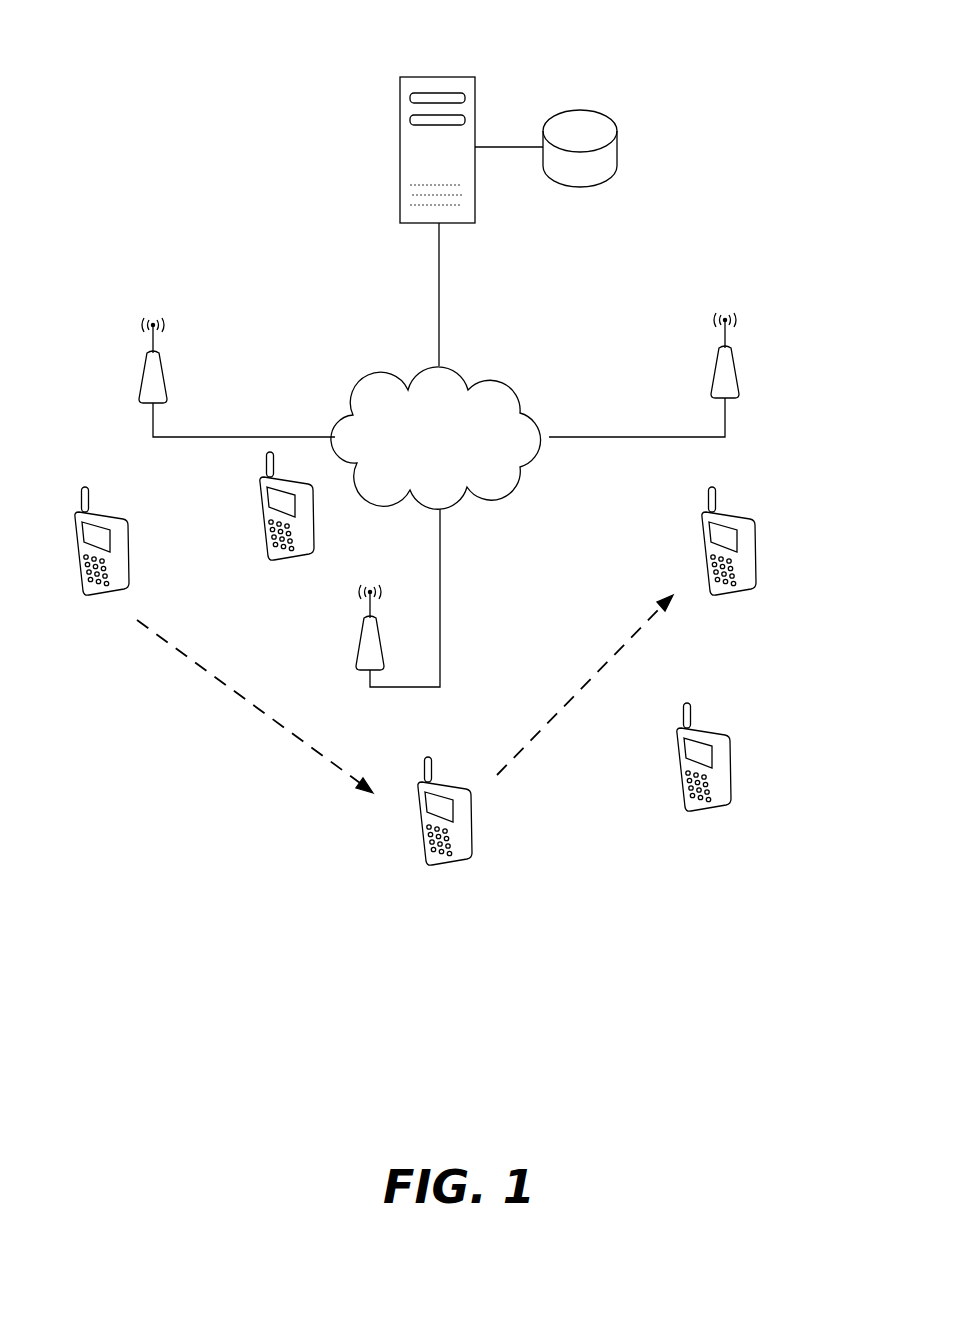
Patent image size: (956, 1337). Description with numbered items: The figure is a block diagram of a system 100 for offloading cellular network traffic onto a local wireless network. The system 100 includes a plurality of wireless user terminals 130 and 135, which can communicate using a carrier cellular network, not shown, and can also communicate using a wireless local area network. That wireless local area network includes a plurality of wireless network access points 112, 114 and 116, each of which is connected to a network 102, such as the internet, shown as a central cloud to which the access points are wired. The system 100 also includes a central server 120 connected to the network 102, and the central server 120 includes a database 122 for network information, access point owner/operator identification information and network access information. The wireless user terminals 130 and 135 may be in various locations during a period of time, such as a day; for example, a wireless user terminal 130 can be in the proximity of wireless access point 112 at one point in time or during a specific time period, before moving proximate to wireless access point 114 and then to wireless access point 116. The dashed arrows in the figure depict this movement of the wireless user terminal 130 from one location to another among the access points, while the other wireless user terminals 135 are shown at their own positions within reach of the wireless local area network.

The system 100 is at (277, 98).
The network 102 is at (436, 438).
The wireless network access point 112 is at (237, 377).
The wireless network access point 114 is at (371, 598).
The wireless network access point 116 is at (678, 375).
The central server 120 is at (471, 221).
The database 122 is at (580, 163).
The wireless user terminal 130 is at (425, 692).
The wireless user terminal 135 is at (479, 644).